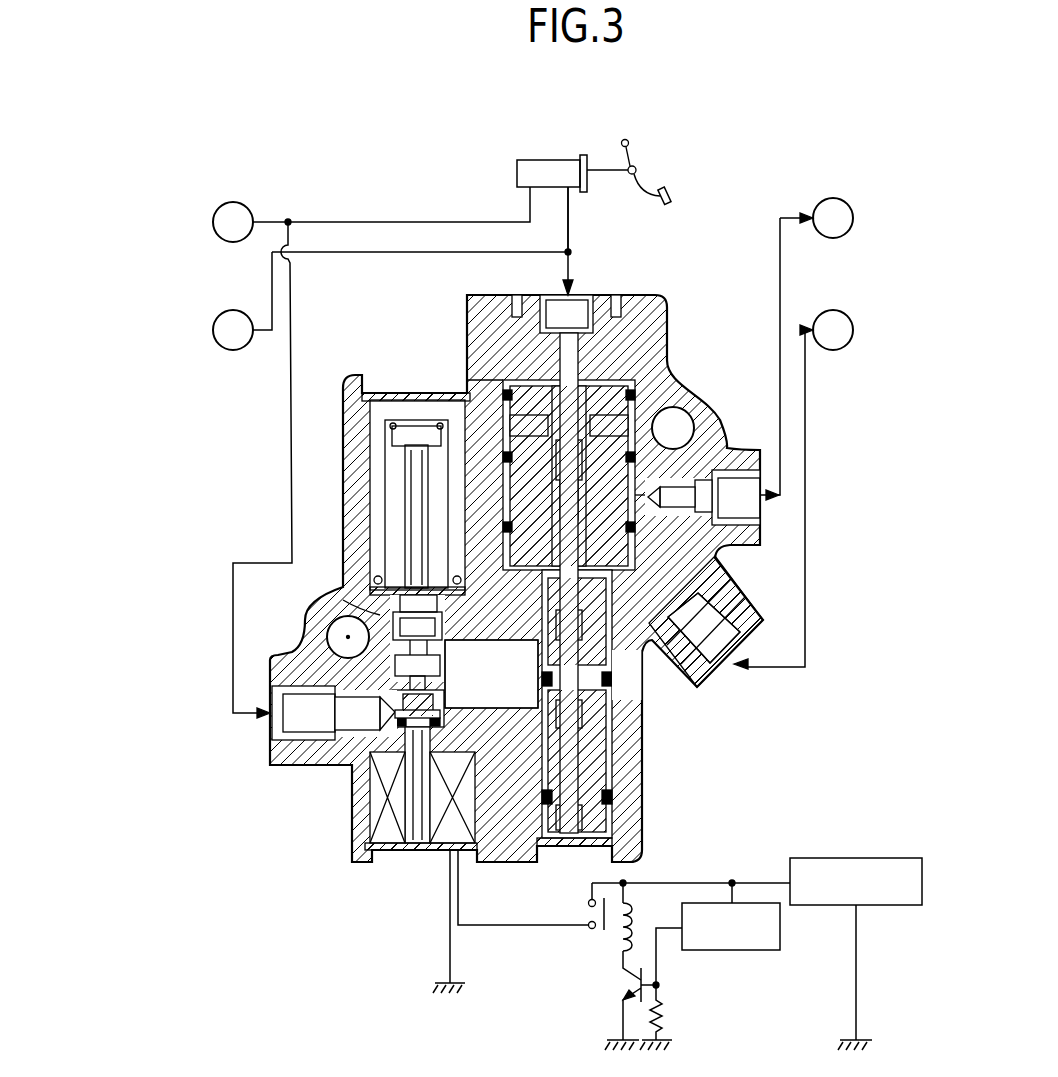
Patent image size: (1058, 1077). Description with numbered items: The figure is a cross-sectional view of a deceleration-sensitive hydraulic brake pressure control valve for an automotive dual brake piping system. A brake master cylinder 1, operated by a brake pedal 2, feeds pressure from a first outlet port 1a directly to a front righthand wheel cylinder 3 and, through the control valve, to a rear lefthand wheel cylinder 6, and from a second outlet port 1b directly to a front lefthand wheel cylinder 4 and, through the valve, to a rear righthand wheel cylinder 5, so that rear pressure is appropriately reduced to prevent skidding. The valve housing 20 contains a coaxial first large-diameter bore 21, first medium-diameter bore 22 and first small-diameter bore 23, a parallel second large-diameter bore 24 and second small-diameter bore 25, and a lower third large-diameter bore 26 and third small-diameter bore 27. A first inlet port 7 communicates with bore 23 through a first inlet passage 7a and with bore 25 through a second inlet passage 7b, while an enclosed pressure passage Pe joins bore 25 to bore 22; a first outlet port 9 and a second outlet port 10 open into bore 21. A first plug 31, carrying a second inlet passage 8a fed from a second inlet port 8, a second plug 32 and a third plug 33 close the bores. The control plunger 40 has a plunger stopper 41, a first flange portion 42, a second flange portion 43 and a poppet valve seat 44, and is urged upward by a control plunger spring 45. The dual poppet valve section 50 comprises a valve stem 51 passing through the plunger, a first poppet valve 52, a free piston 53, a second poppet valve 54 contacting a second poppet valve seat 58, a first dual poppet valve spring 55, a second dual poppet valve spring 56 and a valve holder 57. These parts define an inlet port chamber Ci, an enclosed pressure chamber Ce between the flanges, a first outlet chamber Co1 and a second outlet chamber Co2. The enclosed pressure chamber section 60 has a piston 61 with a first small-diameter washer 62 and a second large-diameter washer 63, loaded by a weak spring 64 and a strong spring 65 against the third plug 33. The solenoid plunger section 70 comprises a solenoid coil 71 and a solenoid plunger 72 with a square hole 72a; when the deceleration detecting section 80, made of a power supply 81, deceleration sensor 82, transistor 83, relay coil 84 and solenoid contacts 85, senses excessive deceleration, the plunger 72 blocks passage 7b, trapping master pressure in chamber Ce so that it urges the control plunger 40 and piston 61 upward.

The brake master cylinder 1 is at (522, 160).
The first outlet port 1a is at (530, 200).
The second outlet port 1b is at (568, 208).
The brake pedal 2 is at (668, 192).
The front righthand wheel cylinder 3 is at (245, 200).
The front lefthand wheel cylinder 4 is at (225, 352).
The rear righthand wheel cylinder 5 is at (825, 198).
The rear lefthand wheel cylinder 6 is at (840, 350).
The first inlet port 7 is at (280, 728).
The first inlet passage 7a is at (495, 720).
The second inlet passage 7b is at (300, 760).
The second inlet port 8 is at (566, 275).
The second inlet passage 8a is at (568, 320).
The first outlet port 9 is at (712, 672).
The second outlet port 10 is at (745, 505).
The valve housing 20 is at (680, 298).
The first large-diameter bore 21 is at (660, 392).
The first medium-diameter bore 22 is at (771, 499).
The first small-diameter bore 23 is at (610, 715).
The second large-diameter bore 24 is at (392, 505).
The second small-diameter bore 25 is at (335, 622).
The third large-diameter bore 26 is at (372, 862).
The third small-diameter bore 27 is at (395, 720).
The first plug 31 is at (628, 300).
The second plug 32 is at (570, 848).
The third plug 33 is at (385, 395).
The control plunger 40 is at (585, 610).
The plunger stopper 41 is at (718, 552).
The first flange portion 42 is at (735, 600).
The second flange portion 43 is at (612, 690).
The poppet valve seat 44 is at (612, 740).
The control plunger spring 45 is at (612, 808).
The dual poppet valve section 50 is at (612, 780).
The valve stem 51 is at (540, 590).
The first poppet valve 52 is at (638, 846).
The free piston 53 is at (628, 530).
The second poppet valve 54 is at (575, 480).
The first dual poppet valve spring 55 is at (520, 780).
The second dual poppet valve spring 56 is at (640, 360).
The valve holder 57 is at (512, 430).
The second poppet valve seat 58 is at (638, 492).
The enclosed pressure chamber section 60 is at (283, 491).
The piston 61 is at (343, 597).
The first small-diameter washer 62 is at (378, 575).
The second large-diameter washer 63 is at (380, 588).
The first small-diameter weak-compression force spring 64 is at (385, 425).
The second large-diameter strong-compression force spring 65 is at (390, 440).
The solenoid plunger section 70 is at (296, 891).
The solenoid coil 71 is at (440, 850).
The solenoid plunger 72 is at (410, 835).
The square hole 72a is at (405, 750).
The deceleration detecting section 80 is at (792, 1027).
The power supply 81 is at (880, 905).
The deceleration sensor 82 is at (735, 950).
The transistor 83 is at (630, 985).
The solenoid coil 84 is at (636, 935).
The pair of solenoid contacts 85 is at (588, 904).
The enclosed pressure chamber Ce is at (395, 668).
The enclosed pressure passage Pe is at (492, 645).
The inlet port chamber Ci is at (612, 790).
The first outlet chamber Co1 is at (728, 575).
The second outlet chamber Co2 is at (727, 446).